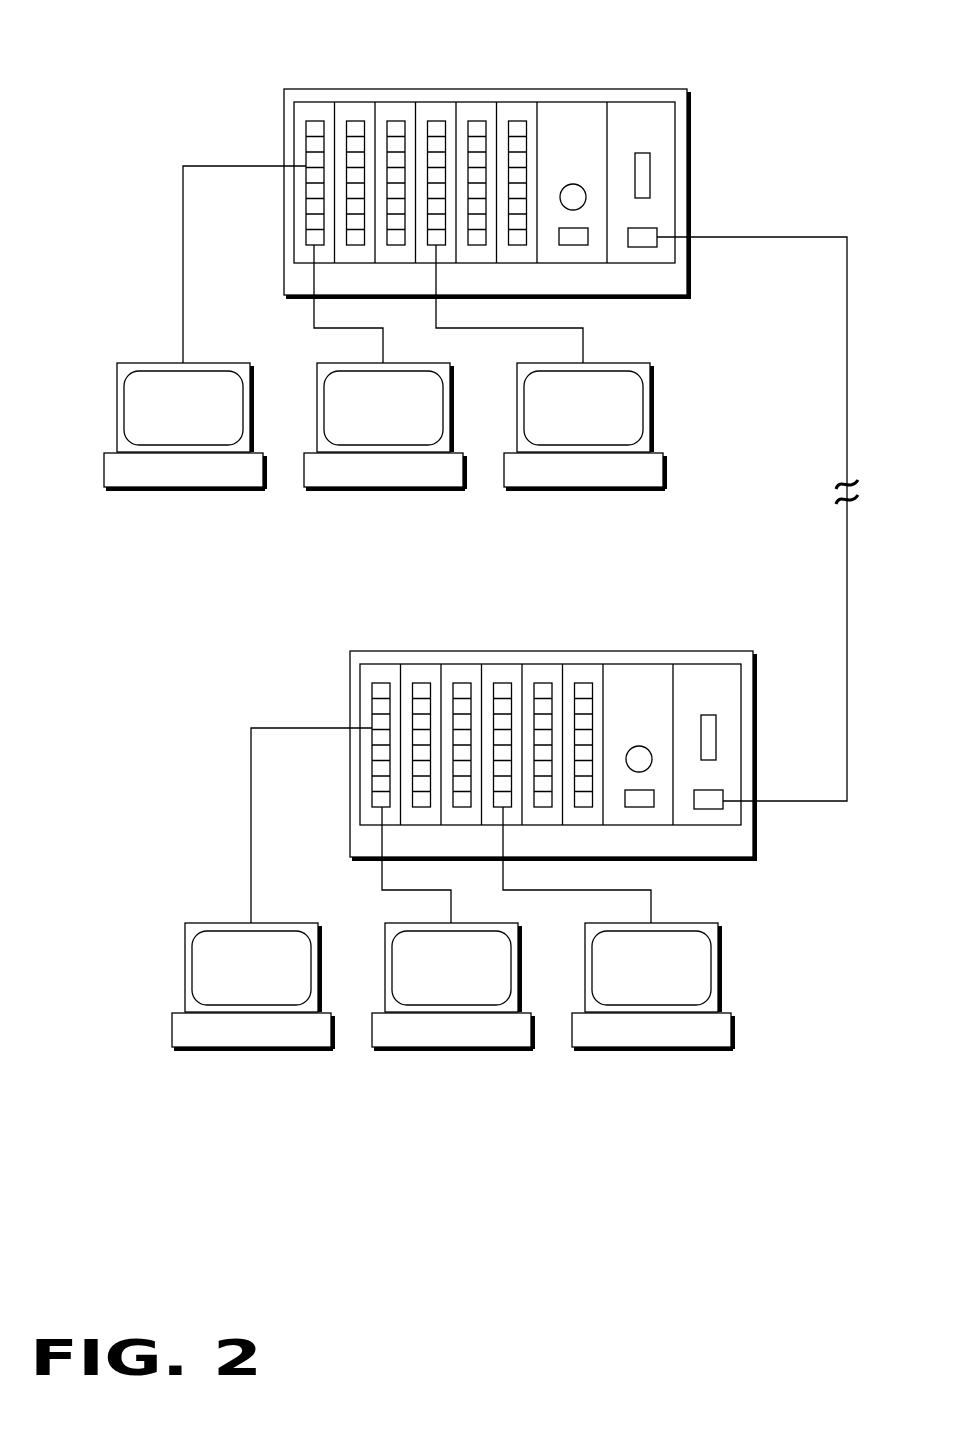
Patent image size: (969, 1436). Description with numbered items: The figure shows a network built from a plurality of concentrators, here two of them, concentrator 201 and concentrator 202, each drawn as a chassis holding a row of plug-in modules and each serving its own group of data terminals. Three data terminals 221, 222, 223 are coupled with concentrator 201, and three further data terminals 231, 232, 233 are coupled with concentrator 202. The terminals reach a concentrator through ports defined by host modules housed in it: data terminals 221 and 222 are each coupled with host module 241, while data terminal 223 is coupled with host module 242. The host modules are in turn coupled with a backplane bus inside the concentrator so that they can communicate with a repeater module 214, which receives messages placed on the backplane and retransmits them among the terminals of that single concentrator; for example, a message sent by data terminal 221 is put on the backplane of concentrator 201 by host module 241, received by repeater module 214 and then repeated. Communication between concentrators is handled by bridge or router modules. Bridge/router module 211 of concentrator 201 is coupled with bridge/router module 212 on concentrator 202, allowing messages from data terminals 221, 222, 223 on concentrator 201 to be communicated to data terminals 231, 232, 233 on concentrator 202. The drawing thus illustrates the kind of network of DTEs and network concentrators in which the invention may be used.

The concentrator 201 is at (526, 152).
The concentrator 202 is at (583, 717).
The bridge/router module 211 is at (667, 123).
The bridge/router module 212 is at (747, 691).
The repeater module 214 is at (568, 115).
The data terminal 221 is at (184, 426).
The data terminal 222 is at (384, 426).
The data terminal 223 is at (584, 426).
The data terminal 231 is at (252, 986).
The data terminal 232 is at (452, 986).
The data terminal 233 is at (652, 986).
The host module 241 is at (312, 113).
The host module 242 is at (437, 113).